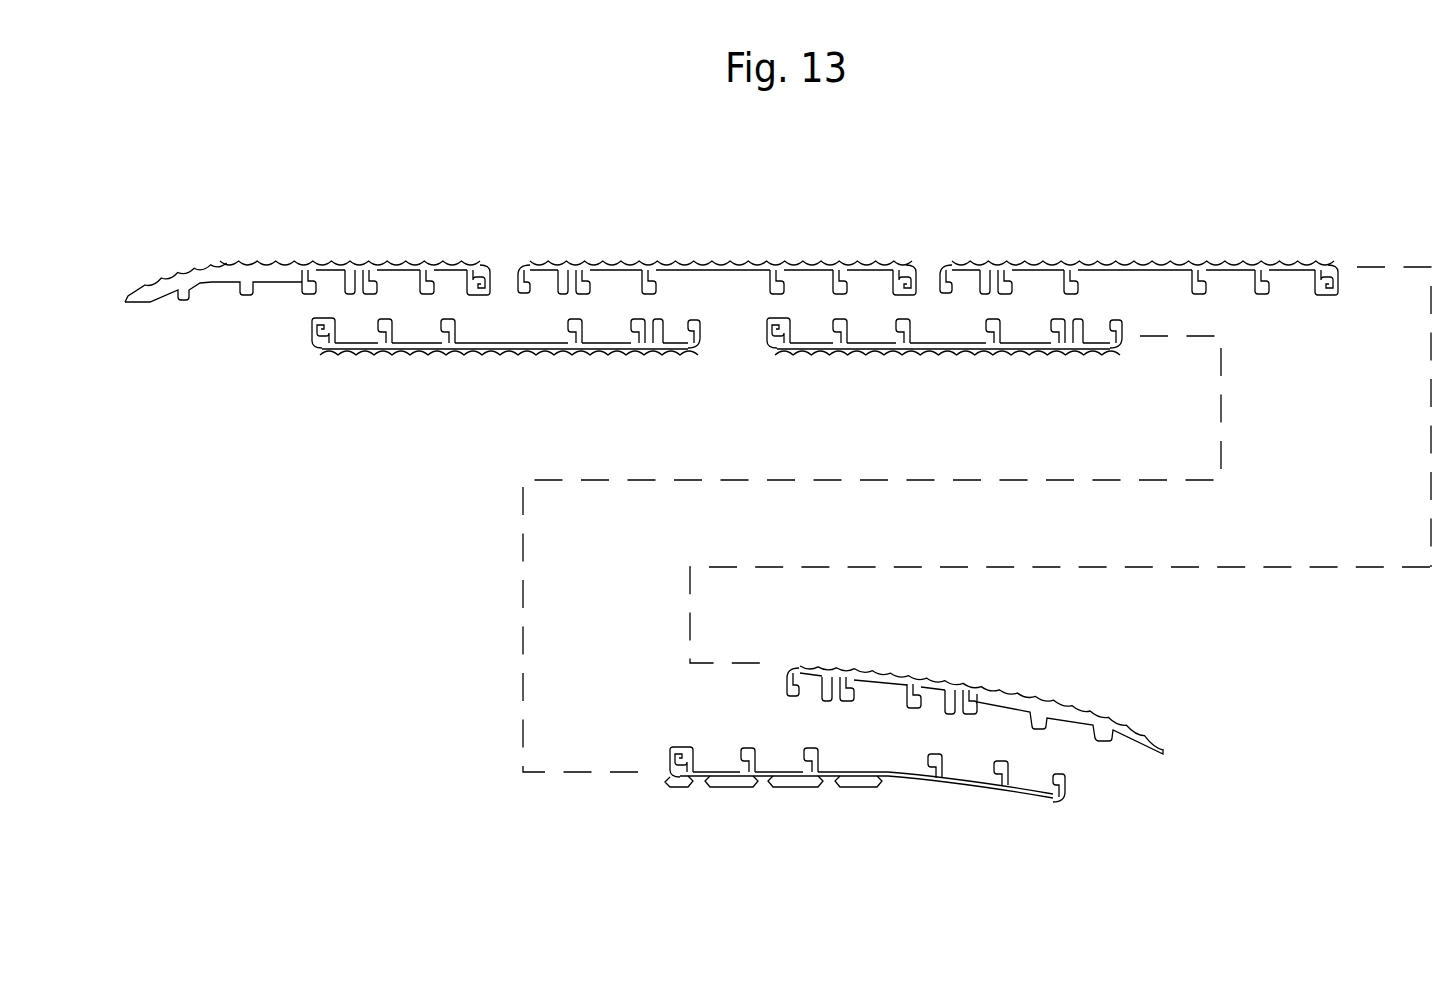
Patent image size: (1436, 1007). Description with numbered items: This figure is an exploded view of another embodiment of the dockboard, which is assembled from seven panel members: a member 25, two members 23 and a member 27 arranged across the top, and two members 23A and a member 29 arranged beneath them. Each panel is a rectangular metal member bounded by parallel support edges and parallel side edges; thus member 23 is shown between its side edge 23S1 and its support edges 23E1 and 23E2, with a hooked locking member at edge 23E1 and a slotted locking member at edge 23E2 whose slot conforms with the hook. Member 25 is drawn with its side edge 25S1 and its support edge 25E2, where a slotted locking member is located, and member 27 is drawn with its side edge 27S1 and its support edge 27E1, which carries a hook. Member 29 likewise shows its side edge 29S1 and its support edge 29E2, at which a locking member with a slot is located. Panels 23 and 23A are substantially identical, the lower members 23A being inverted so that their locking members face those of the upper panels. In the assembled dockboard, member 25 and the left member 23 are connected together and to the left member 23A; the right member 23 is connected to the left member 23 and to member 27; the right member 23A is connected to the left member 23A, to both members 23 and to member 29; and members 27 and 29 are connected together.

The upper metal member or panel 23 is at (752, 262).
The lower metal member or panel 23A is at (551, 352).
The support edge 23E1 is at (524, 266).
The support edge 23E2 is at (918, 265).
The side edge 23S1 is at (640, 262).
The upper metal member or panel 25 is at (403, 262).
The side edge 25S1 is at (280, 270).
The support edge 25E2 is at (490, 262).
The upper metal member or panel 27 is at (1010, 690).
The side edge 27S1 is at (915, 672).
The support edge 27E1 is at (790, 668).
The lower metal member or panel 29 is at (915, 780).
The side edge 29S1 is at (855, 780).
The support edge 29E2 is at (672, 760).